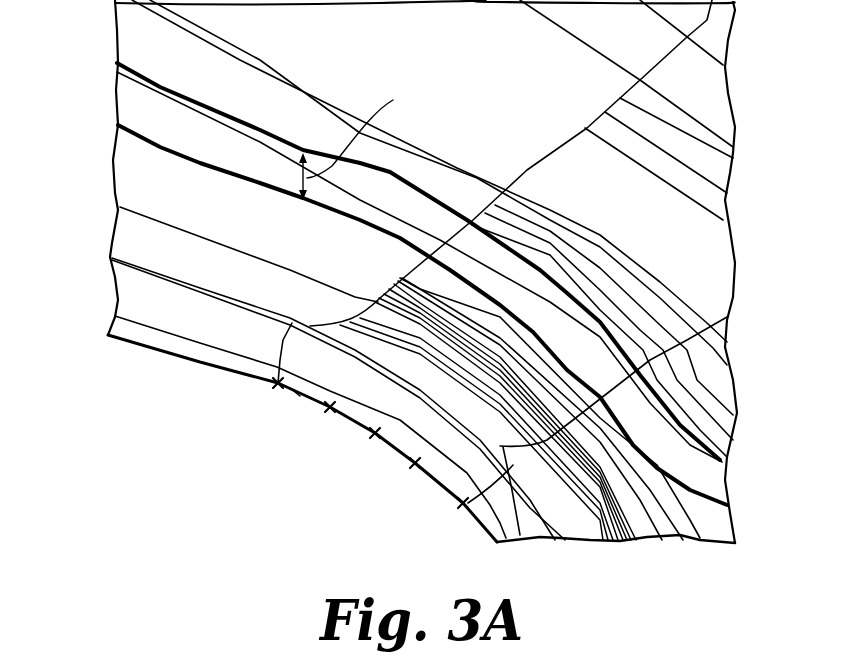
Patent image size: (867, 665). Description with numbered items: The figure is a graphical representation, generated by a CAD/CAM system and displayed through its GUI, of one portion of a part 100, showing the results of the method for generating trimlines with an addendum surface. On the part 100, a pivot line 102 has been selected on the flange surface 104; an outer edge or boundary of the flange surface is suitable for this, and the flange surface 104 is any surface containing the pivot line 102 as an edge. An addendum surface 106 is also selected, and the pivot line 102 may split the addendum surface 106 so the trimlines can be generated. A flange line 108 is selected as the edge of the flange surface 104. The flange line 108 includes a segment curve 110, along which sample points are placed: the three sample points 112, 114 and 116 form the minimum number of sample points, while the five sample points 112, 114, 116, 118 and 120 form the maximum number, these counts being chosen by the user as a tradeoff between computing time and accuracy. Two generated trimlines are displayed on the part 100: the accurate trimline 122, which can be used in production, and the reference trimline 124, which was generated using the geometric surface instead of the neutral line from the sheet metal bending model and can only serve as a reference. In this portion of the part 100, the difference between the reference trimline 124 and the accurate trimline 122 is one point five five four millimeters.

The part 100 is at (650, 190).
The pivot line 102 is at (134, 265).
The flange surface 104 is at (137, 295).
The addendum surface 106 is at (138, 173).
The flange line 108 is at (152, 348).
The segment curve 110 is at (302, 395).
The sample point 112 is at (275, 385).
The sample point 114 is at (372, 437).
The sample point 116 is at (462, 505).
The sample point 118 is at (328, 410).
The sample point 120 is at (412, 467).
The trimline 122 is at (133, 64).
The trimline 124 is at (118, 125).